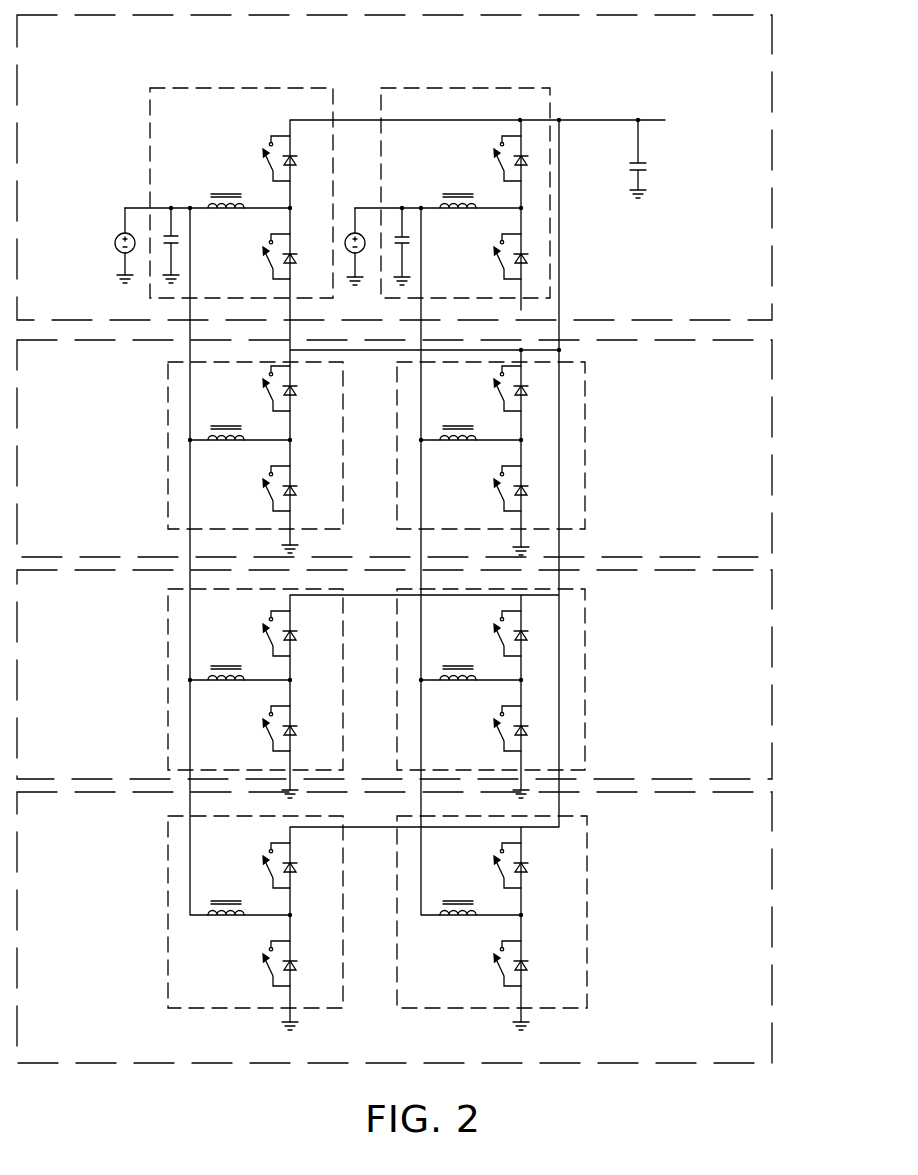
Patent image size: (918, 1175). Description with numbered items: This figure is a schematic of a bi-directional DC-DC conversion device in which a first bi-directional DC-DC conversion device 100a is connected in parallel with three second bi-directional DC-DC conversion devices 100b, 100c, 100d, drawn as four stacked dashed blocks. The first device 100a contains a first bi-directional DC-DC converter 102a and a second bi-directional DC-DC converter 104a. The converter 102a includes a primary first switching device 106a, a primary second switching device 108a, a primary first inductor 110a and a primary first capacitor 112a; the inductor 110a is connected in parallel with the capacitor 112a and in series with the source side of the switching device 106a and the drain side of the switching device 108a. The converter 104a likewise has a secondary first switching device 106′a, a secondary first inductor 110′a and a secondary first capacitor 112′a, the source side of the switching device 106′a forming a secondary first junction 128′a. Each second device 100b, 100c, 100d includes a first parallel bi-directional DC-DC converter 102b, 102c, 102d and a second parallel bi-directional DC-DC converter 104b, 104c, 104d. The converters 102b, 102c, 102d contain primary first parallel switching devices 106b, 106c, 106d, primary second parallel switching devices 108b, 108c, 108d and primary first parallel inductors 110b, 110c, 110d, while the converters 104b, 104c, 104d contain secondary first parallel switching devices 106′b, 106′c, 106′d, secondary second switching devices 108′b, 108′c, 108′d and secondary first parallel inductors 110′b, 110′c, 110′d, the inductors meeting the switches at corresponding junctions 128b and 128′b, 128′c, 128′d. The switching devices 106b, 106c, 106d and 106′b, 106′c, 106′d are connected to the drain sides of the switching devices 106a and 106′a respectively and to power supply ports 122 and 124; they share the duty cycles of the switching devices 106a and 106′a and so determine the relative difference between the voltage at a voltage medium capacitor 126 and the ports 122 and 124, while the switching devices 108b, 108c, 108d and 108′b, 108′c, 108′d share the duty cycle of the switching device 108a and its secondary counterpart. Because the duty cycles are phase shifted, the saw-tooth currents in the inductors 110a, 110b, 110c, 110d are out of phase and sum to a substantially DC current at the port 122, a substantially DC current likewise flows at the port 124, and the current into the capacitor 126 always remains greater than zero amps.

The first bi-directional DC-DC conversion device 100a is at (772, 250).
The second bi-directional DC-DC conversion device 100b is at (772, 487).
The second bi-directional DC-DC conversion device 100c is at (772, 690).
The second bi-directional DC-DC conversion device 100d is at (772, 905).
The first bi-directional DC-DC converter 102a is at (151, 87).
The first parallel bi-directional DC-DC converter 102b is at (168, 425).
The first parallel bi-directional DC-DC converter 102c is at (168, 660).
The first parallel bi-directional DC-DC converter 102d is at (168, 860).
The second bi-directional DC-DC converter 104a is at (510, 86).
The second parallel bi-directional DC-DC converter 104b is at (585, 400).
The second parallel bi-directional DC-DC converter 104c is at (587, 632).
The second parallel bi-directional DC-DC converter 104d is at (587, 858).
The primary first switching device 106a is at (263, 166).
The primary first parallel switching device 106b is at (263, 403).
The primary first parallel switching device 106c is at (263, 635).
The primary first parallel switching device 106d is at (263, 862).
The secondary first switching device 106′a is at (493, 168).
The secondary first parallel switching device 106′b is at (493, 405).
The secondary first parallel switching device 106′c is at (493, 640).
The secondary first parallel switching device 106′d is at (493, 870).
The primary second switching device 108a is at (263, 262).
The primary second parallel switching device 108b is at (263, 500).
The primary second parallel switching device 108c is at (263, 740).
The primary second parallel switching device 108d is at (262, 975).
The secondary second switching device 108′b is at (497, 497).
The secondary second switching device 108′c is at (497, 745).
The secondary second switching device 108′d is at (490, 975).
The primary first inductor 110a is at (217, 193).
The primary first parallel inductor 110b is at (230, 423).
The primary first parallel inductor 110c is at (230, 662).
The primary first parallel inductor 110d is at (230, 897).
The secondary first inductor 110′a is at (455, 213).
The secondary first parallel inductor 110′b is at (453, 447).
The secondary first parallel inductor 110′c is at (453, 687).
The secondary first parallel inductor 110′d is at (460, 897).
The primary first capacitor 112a is at (185, 239).
The secondary first capacitor 112′a is at (493, 268).
The power supply port 122 is at (112, 243).
The power supply port 124 is at (347, 230).
The voltage medium capacitor 126 is at (652, 152).
The switching node 128b is at (320, 425).
The secondary first junction 128′a is at (525, 208).
The switching node of second cell 128′b is at (525, 439).
The switching node of second cell 128′c is at (525, 680).
The switching node of second cell 128′d is at (525, 915).